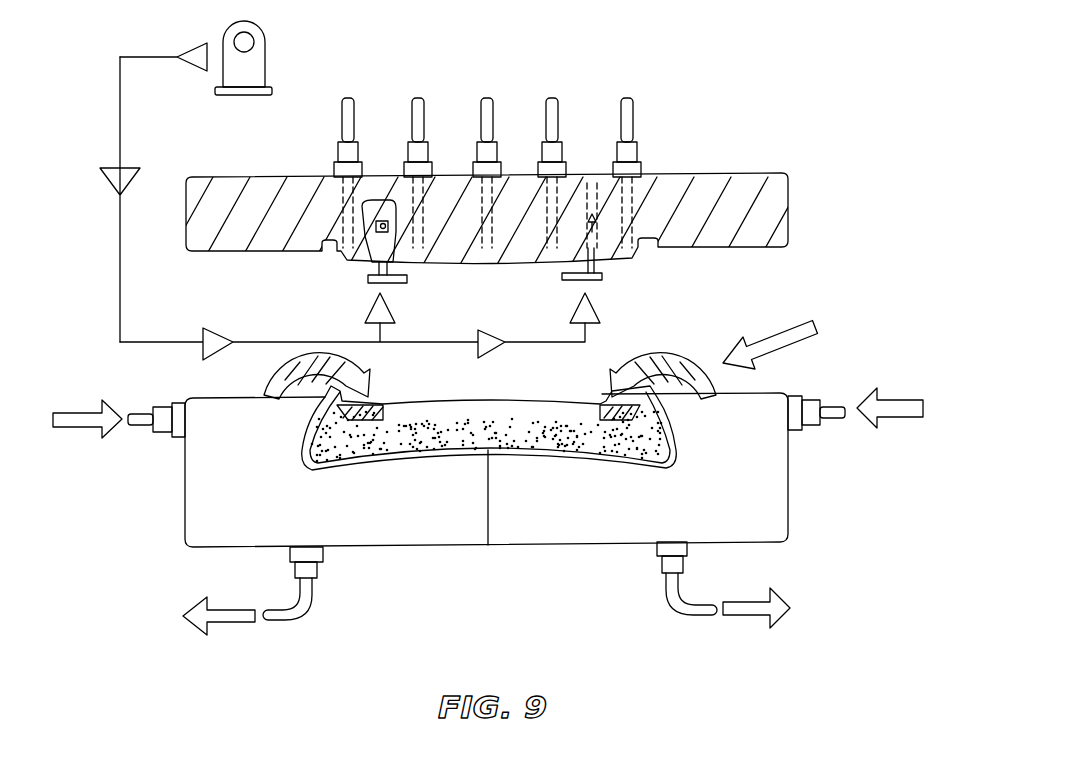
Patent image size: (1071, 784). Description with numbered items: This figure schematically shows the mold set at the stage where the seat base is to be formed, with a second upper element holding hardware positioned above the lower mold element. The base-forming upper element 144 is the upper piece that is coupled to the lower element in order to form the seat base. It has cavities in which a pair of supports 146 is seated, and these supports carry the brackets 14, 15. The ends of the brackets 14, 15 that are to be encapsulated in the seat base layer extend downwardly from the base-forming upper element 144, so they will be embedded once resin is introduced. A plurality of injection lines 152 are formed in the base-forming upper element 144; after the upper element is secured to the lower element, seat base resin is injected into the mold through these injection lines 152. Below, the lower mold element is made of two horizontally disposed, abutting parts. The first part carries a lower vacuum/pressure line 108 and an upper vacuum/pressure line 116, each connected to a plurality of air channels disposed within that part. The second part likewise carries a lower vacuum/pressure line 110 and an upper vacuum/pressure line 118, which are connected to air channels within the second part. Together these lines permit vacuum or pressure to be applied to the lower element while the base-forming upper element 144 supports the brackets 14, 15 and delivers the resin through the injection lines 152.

The bracket 14 is at (368, 277).
The bracket 15 is at (605, 277).
The lower vacuum/pressure line 108 is at (310, 618).
The lower vacuum/pressure line 110 is at (670, 604).
The upper vacuum/pressure line 116 is at (140, 426).
The upper vacuum/pressure line 118 is at (833, 403).
The base-forming upper element 144 is at (742, 185).
The support 146 is at (363, 205).
The injection lines 152 is at (634, 126).